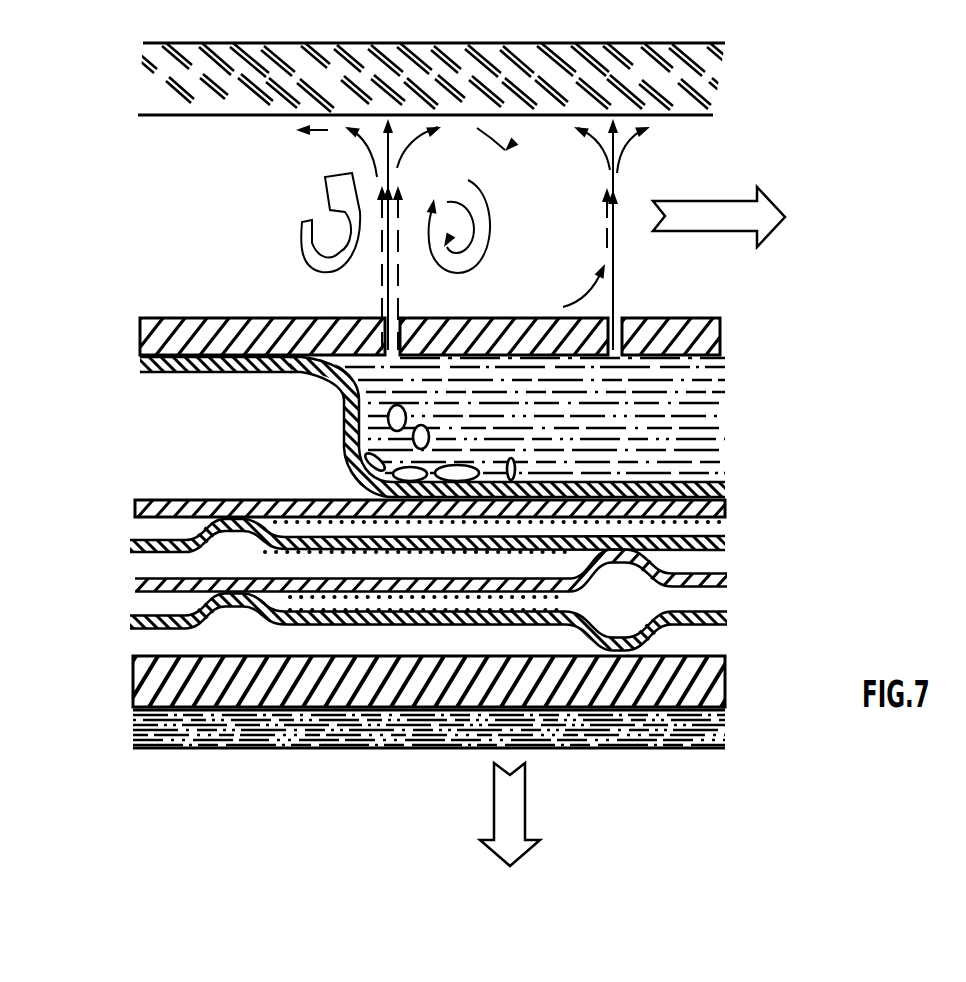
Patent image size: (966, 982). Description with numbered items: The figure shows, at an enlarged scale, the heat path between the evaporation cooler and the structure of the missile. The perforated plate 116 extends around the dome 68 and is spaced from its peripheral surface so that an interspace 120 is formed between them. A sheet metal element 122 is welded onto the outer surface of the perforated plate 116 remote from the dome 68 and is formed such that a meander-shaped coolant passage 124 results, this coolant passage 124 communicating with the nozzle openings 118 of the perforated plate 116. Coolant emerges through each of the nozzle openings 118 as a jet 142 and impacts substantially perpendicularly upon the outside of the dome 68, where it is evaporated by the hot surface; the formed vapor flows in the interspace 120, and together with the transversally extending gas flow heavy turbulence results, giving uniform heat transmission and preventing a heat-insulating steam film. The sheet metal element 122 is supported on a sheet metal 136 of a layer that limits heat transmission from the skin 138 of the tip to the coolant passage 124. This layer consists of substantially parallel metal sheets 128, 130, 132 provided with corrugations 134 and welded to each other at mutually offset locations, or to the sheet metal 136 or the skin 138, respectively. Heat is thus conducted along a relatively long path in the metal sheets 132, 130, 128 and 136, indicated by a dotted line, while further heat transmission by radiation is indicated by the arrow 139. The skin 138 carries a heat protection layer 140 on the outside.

The dome 68 is at (493, 75).
The interspace 120 is at (178, 205).
The jet 142 is at (614, 203).
The perforated plate 116 is at (212, 318).
The nozzle openings 118 is at (617, 348).
The coolant passage 124 is at (326, 384).
The sheet metal element 122 is at (345, 410).
The sheet metal 136 is at (148, 502).
The metal sheet 128 is at (303, 537).
The corrugations 134 is at (207, 528).
The metal sheet 130 is at (217, 783).
The metal sheet 132 is at (404, 625).
The skin 138 is at (337, 780).
The heat protection layer 140 is at (617, 727).
The arrow 139 is at (515, 802).